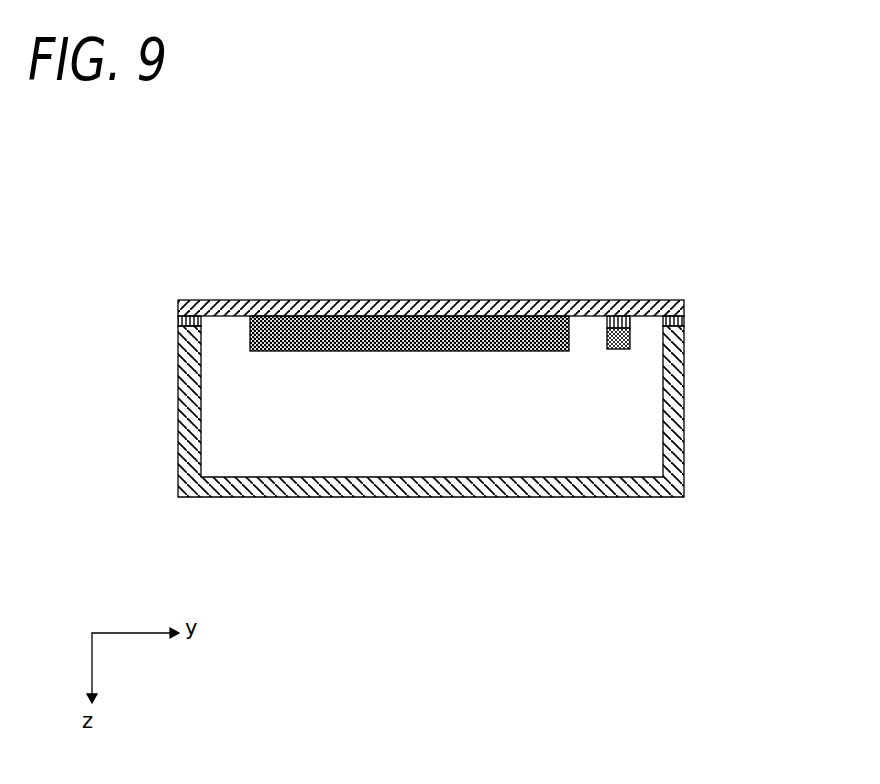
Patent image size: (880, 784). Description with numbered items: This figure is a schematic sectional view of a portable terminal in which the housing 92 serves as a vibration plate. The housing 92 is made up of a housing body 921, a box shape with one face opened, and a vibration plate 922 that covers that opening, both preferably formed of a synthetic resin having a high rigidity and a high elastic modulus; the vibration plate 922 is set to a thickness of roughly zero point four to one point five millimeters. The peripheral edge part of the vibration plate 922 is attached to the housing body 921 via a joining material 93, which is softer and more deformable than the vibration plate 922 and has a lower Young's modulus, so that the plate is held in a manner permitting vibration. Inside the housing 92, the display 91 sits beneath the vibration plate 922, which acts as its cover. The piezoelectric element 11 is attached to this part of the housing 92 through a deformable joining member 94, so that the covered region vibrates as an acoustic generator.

The piezoelectric element 11 is at (618, 352).
The display 91 is at (485, 320).
The housing 92 is at (431, 486).
The housing body 921 is at (450, 497).
The vibration plate 922 is at (232, 316).
The joining material 93 is at (178, 318).
The joining member 94 is at (600, 316).